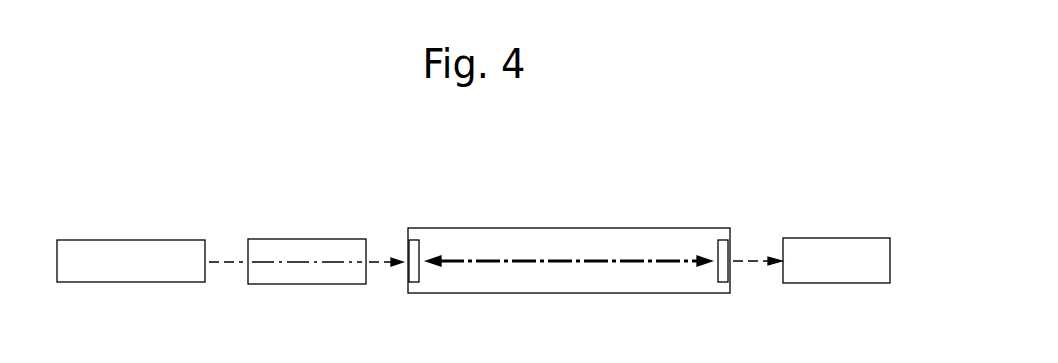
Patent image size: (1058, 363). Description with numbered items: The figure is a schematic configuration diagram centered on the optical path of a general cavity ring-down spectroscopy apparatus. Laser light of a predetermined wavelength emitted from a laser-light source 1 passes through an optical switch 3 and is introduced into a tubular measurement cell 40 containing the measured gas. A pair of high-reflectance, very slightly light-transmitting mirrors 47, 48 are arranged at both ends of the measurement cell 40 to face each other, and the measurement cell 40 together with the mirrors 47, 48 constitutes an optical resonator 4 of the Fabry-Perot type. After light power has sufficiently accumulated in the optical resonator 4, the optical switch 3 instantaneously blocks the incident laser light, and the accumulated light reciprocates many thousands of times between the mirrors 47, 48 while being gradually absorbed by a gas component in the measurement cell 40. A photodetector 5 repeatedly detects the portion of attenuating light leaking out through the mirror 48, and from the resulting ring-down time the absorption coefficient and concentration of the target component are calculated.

The laser-light source 1 is at (167, 239).
The optical switch 3 is at (316, 239).
The optical resonator 4 is at (603, 189).
The measurement cell 40 is at (568, 228).
The mirror 47 is at (420, 268).
The mirror 48 is at (718, 268).
The photodetector 5 is at (858, 238).